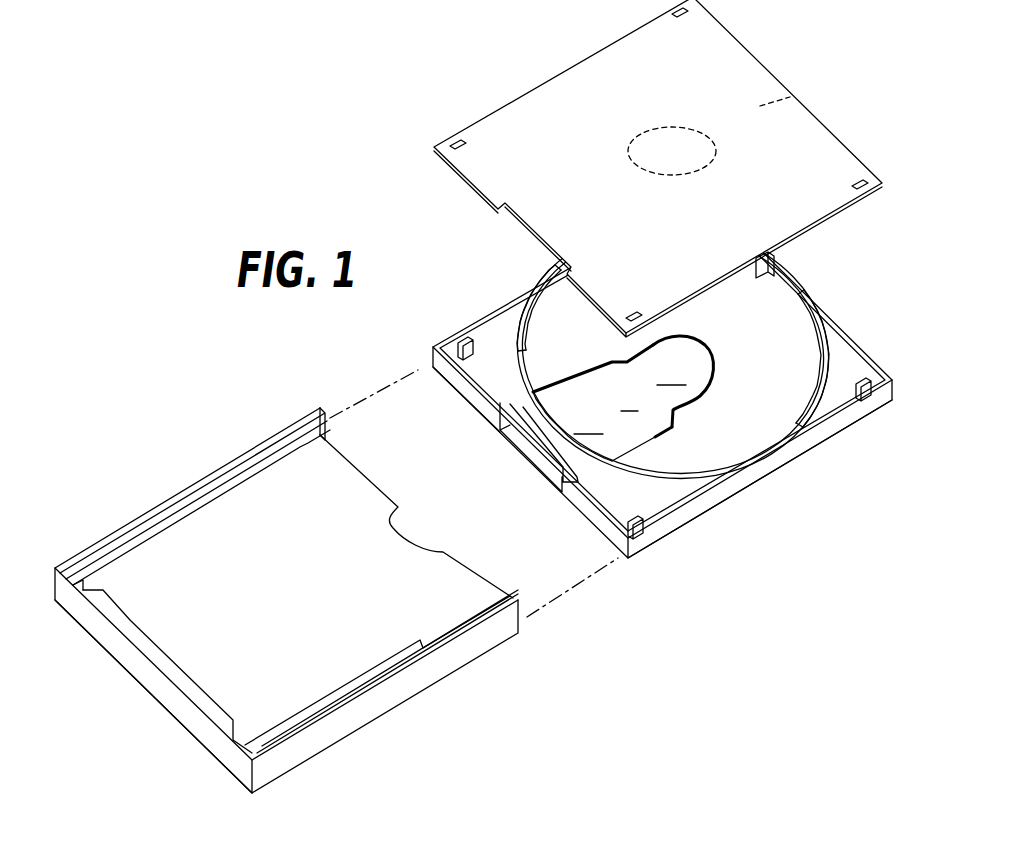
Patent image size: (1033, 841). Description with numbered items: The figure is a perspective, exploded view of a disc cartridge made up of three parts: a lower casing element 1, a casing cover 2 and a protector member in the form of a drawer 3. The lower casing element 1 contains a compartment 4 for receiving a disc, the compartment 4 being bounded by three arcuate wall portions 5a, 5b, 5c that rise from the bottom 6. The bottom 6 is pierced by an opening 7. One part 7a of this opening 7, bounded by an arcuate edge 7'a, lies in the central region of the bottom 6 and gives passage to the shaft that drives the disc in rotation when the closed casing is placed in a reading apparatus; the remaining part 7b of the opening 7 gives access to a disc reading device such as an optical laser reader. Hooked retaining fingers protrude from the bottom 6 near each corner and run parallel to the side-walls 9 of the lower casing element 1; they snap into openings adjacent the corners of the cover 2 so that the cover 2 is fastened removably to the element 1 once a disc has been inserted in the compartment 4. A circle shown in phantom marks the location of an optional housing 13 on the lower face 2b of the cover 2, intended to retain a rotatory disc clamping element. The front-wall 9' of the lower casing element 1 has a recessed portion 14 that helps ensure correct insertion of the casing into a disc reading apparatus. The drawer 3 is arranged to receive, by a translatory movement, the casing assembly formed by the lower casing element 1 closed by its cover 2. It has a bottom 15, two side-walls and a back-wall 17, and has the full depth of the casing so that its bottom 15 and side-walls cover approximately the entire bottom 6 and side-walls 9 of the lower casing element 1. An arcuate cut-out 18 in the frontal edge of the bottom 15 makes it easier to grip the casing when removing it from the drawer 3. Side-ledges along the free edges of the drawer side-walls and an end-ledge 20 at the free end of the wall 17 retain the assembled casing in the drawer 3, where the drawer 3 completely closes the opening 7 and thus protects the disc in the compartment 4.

The lower casing element 1 is at (661, 399).
The casing cover 2 is at (656, 168).
The lower face of cover 2b is at (795, 96).
The drawer 3 is at (286, 591).
The compartment 4 is at (742, 417).
The arcuate wall portion 5a is at (528, 322).
The arcuate wall portion 5b is at (823, 340).
The arcuate wall portion 5c is at (776, 275).
The bottom 6 is at (782, 395).
The opening 7 is at (638, 378).
The part of opening 7a is at (683, 381).
The part of opening 7b is at (570, 428).
The arcuate edge 7'a is at (698, 321).
The side-walls 9 is at (760, 479).
The front-wall 9' is at (460, 410).
The housing 13 is at (628, 152).
The recessed portion 14 is at (528, 418).
The bottom 15 is at (275, 475).
The back-wall 17 is at (148, 680).
The arcuate cut-out 18 is at (392, 537).
The end-ledge 20 is at (180, 680).